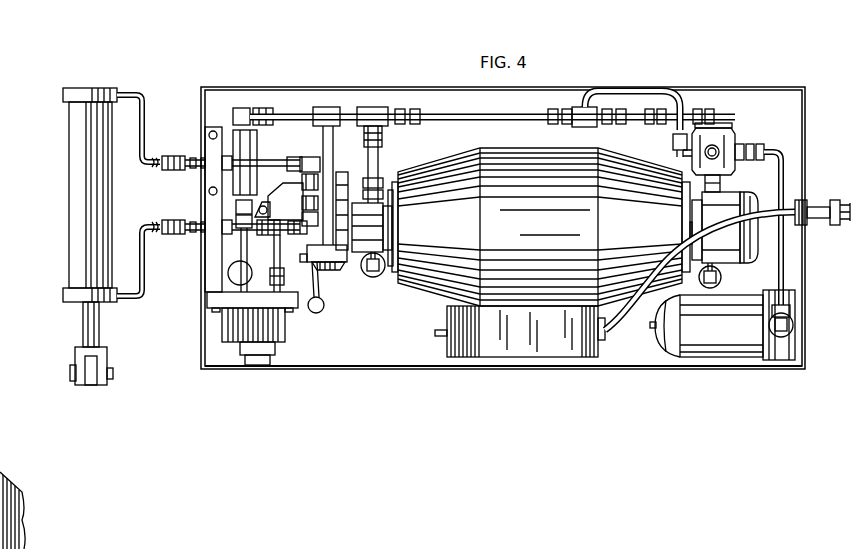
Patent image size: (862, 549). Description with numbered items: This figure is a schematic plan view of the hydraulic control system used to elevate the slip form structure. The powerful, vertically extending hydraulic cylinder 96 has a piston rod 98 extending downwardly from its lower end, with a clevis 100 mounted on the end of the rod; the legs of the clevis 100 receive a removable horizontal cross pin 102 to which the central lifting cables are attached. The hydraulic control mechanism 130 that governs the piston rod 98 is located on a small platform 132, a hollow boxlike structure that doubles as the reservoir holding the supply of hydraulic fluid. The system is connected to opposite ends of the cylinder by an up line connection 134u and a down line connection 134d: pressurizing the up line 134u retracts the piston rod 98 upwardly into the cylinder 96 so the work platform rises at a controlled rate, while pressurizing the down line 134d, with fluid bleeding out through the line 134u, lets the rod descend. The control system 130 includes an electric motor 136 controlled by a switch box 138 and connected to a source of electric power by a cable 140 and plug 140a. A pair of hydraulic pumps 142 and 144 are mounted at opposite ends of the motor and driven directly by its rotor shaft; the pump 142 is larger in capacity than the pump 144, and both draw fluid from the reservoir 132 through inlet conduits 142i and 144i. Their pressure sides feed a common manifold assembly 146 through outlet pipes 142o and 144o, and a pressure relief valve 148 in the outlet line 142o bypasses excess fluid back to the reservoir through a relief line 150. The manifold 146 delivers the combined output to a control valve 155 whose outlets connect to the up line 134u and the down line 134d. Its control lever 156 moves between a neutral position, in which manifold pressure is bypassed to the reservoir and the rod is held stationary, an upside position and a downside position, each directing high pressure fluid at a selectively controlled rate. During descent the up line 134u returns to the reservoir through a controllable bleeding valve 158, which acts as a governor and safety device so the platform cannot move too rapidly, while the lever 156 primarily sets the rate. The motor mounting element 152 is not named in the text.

The hydraulic cylinder 96 is at (72, 187).
The piston rod 98 is at (99, 329).
The clevis 100 is at (106, 359).
The cross pin 102 is at (112, 377).
The hydraulic control mechanism 130 is at (574, 426).
The platform 132 is at (372, 360).
The down line connection 134d is at (143, 101).
The up line connection 134u is at (144, 266).
The electric motor 136 is at (541, 227).
The switch box 138 is at (497, 343).
The cable 140 is at (823, 227).
The plug 140a is at (838, 199).
The hydraulic pump 142 is at (724, 227).
The outlet pipe 142o is at (721, 187).
The inlet conduit 142i is at (722, 278).
The hydraulic pump 144 is at (387, 228).
The outlet pipe 144o is at (379, 158).
The inlet conduit 144i is at (368, 278).
The manifold assembly 146 is at (430, 112).
The pressure relief valve 148 is at (728, 148).
The relief line 150 is at (787, 167).
The electric motor 152 is at (731, 347).
The control valve 155 is at (288, 202).
The control lever 156 is at (316, 292).
The bleeding valve 158 is at (243, 327).